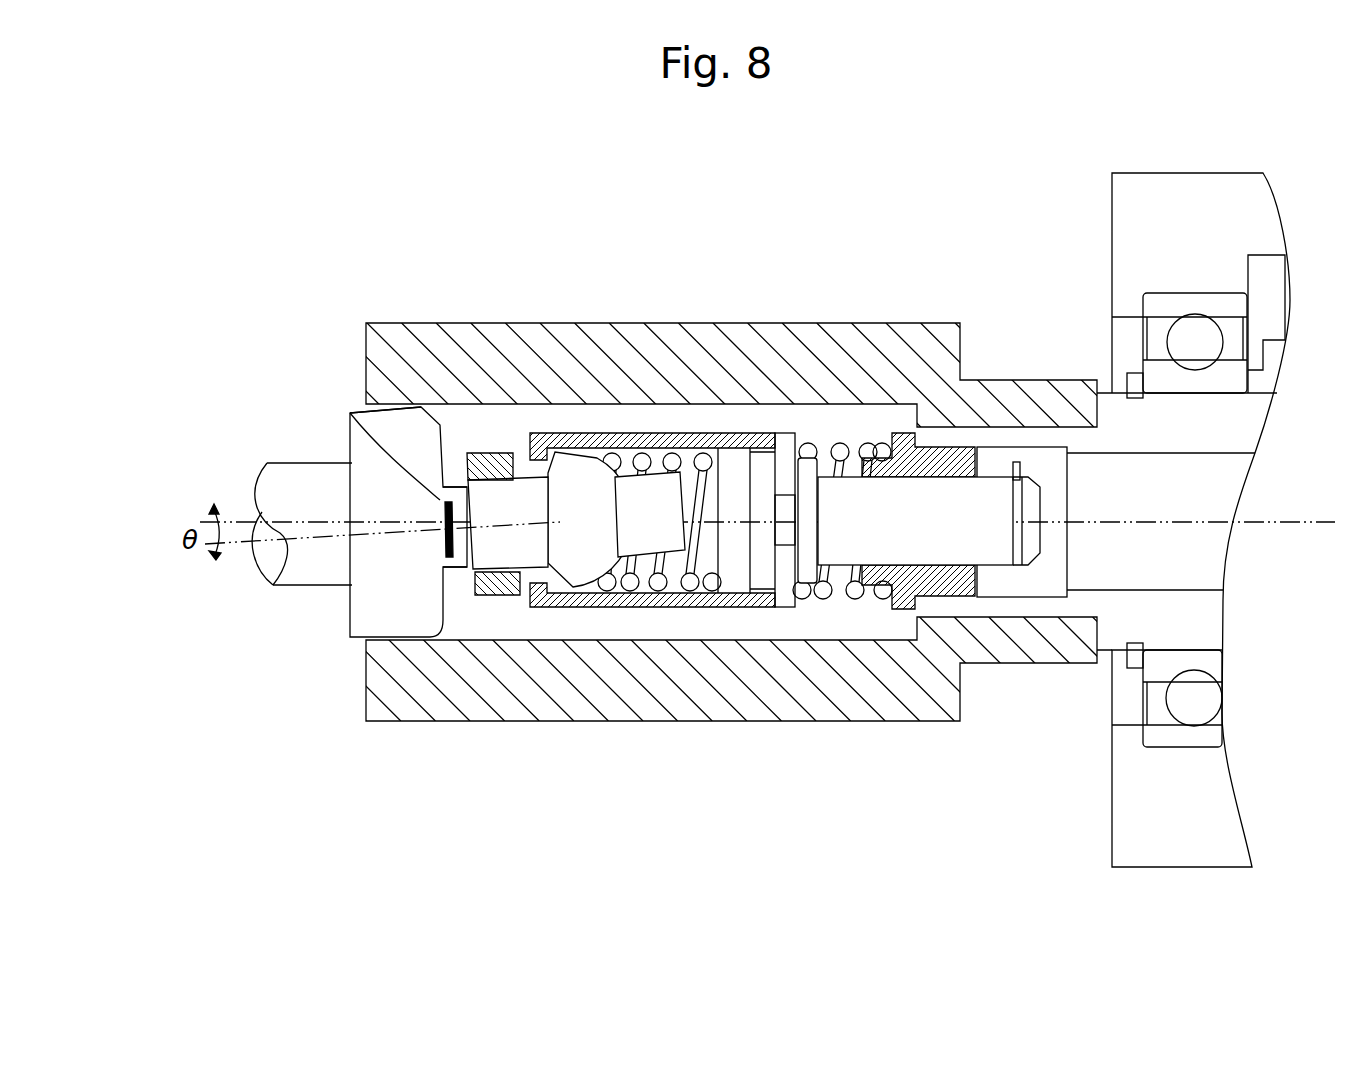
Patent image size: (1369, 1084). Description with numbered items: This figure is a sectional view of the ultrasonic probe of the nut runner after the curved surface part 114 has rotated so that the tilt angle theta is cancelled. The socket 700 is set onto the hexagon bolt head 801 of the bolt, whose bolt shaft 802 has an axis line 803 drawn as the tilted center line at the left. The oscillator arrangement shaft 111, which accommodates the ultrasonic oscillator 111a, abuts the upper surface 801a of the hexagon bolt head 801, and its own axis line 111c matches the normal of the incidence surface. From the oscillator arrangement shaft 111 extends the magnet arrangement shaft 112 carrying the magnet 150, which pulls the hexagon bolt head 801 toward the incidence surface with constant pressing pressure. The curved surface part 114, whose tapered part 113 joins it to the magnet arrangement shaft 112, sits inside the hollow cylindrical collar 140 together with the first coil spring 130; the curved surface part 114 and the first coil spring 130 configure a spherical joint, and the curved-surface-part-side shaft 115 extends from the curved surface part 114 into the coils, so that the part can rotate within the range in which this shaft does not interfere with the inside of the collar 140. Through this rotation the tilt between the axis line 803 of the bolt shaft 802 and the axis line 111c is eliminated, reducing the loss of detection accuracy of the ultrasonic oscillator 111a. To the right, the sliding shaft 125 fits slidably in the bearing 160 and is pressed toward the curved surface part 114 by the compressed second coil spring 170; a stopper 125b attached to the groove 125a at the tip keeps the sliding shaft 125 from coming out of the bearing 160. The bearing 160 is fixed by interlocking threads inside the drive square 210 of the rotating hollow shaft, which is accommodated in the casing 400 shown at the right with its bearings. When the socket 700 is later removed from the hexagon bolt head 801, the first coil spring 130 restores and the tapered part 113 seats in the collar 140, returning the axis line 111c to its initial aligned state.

The oscillator arrangement shaft 111 is at (441, 487).
The ultrasonic oscillator 111a is at (350, 413).
The axis line of the oscillator arrangement shaft 111c is at (250, 544).
The magnet arrangement shaft 112 is at (525, 478).
The tapered part 113 is at (555, 452).
The curved surface part 114 is at (604, 487).
The curved-surface-part-side shaft 115 is at (658, 470).
The sliding shaft 125 is at (927, 497).
The groove 125a is at (1020, 565).
The stopper 125b is at (1018, 462).
The first coil spring 130 is at (654, 590).
The collar 140 is at (712, 433).
The magnet 150 is at (487, 453).
The bearing 160 is at (910, 609).
The second coil spring 170 is at (823, 599).
The drive square 210 is at (1047, 600).
The casing 400 is at (1184, 868).
The socket 700 is at (760, 323).
The hexagon bolt head 801 is at (418, 620).
The upper surface of the hexagon bolt head 801a is at (448, 590).
The bolt shaft 802 is at (281, 463).
The axis line of the bolt shaft 803 is at (316, 671).